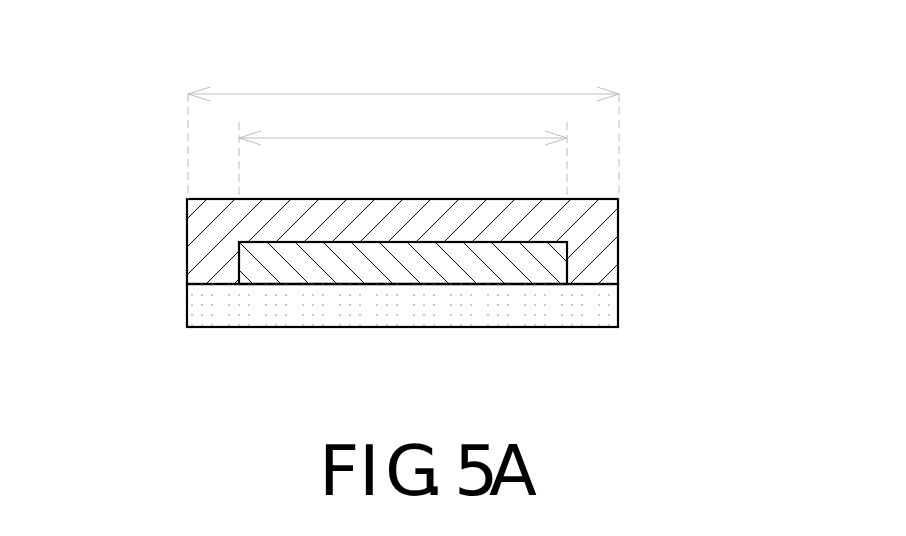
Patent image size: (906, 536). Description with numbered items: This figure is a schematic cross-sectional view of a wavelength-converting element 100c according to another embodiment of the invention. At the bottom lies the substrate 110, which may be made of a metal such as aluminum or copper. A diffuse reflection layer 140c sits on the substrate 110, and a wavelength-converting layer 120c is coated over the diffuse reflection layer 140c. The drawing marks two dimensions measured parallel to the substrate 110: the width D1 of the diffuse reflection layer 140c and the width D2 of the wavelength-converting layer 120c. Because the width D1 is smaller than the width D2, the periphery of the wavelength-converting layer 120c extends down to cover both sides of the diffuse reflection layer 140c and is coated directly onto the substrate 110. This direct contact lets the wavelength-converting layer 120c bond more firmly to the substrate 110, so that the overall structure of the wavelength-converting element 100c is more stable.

The wavelength-converting element 100c is at (148, 37).
The wavelength-converting layer 120c is at (606, 222).
The diffuse reflection layer 140c is at (545, 262).
The substrate 110 is at (606, 307).
The width of the diffuse reflection layer D1 is at (403, 149).
The width of the wavelength-converting layer D2 is at (403, 127).